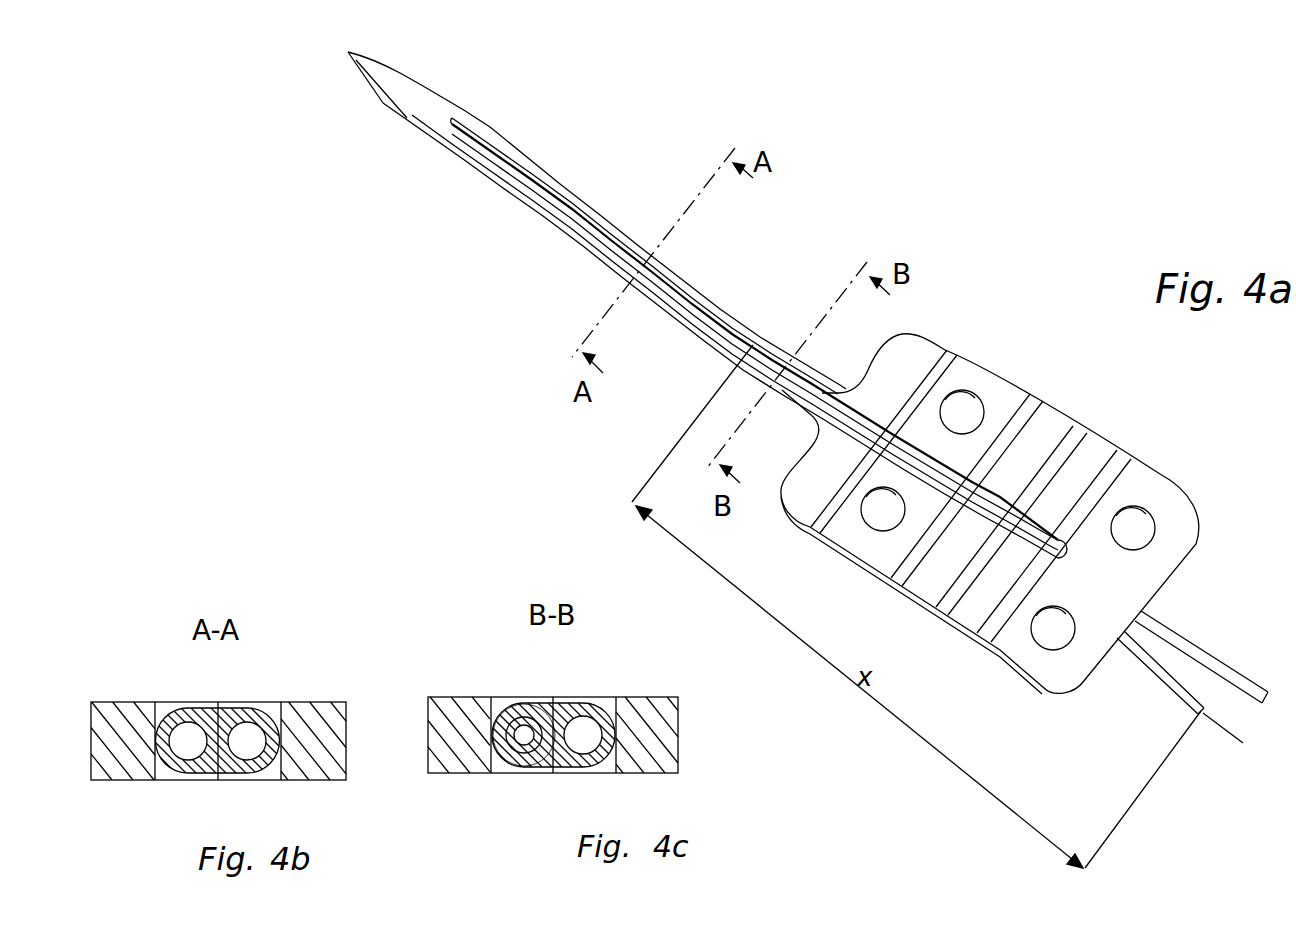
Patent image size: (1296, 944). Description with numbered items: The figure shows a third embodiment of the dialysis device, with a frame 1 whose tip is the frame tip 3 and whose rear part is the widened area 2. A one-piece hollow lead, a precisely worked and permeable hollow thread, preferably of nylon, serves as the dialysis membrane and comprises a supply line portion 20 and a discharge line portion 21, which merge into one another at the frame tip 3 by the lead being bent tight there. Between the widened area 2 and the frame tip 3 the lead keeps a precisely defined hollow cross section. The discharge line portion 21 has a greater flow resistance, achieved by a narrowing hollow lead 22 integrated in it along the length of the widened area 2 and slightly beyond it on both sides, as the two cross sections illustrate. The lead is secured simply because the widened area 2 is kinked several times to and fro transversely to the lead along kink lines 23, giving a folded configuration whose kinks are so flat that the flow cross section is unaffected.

In FIG. 4A, the frame 1 is at (923, 283).
In FIG. 4B, the frame 1 is at (112, 723).
In FIG. 4C, the frame 1 is at (457, 722).
In FIG. 4A, the widened area 2 is at (953, 380).
In FIG. 4A, the frame tip 3 is at (402, 89).
In FIG. 4A, the supply line portion 20 is at (1210, 655).
In FIG. 4B, the supply line portion 20 is at (258, 720).
In FIG. 4C, the supply line portion 20 is at (595, 718).
In FIG. 4A, the discharge line portion 21 is at (1148, 662).
In FIG. 4B, the discharge line portion 21 is at (185, 765).
In FIG. 4C, the discharge line portion 21 is at (516, 762).
In FIG. 4C, the hollow lead 22 is at (510, 720).
In FIG. 4A, the kink lines 23 is at (975, 630).